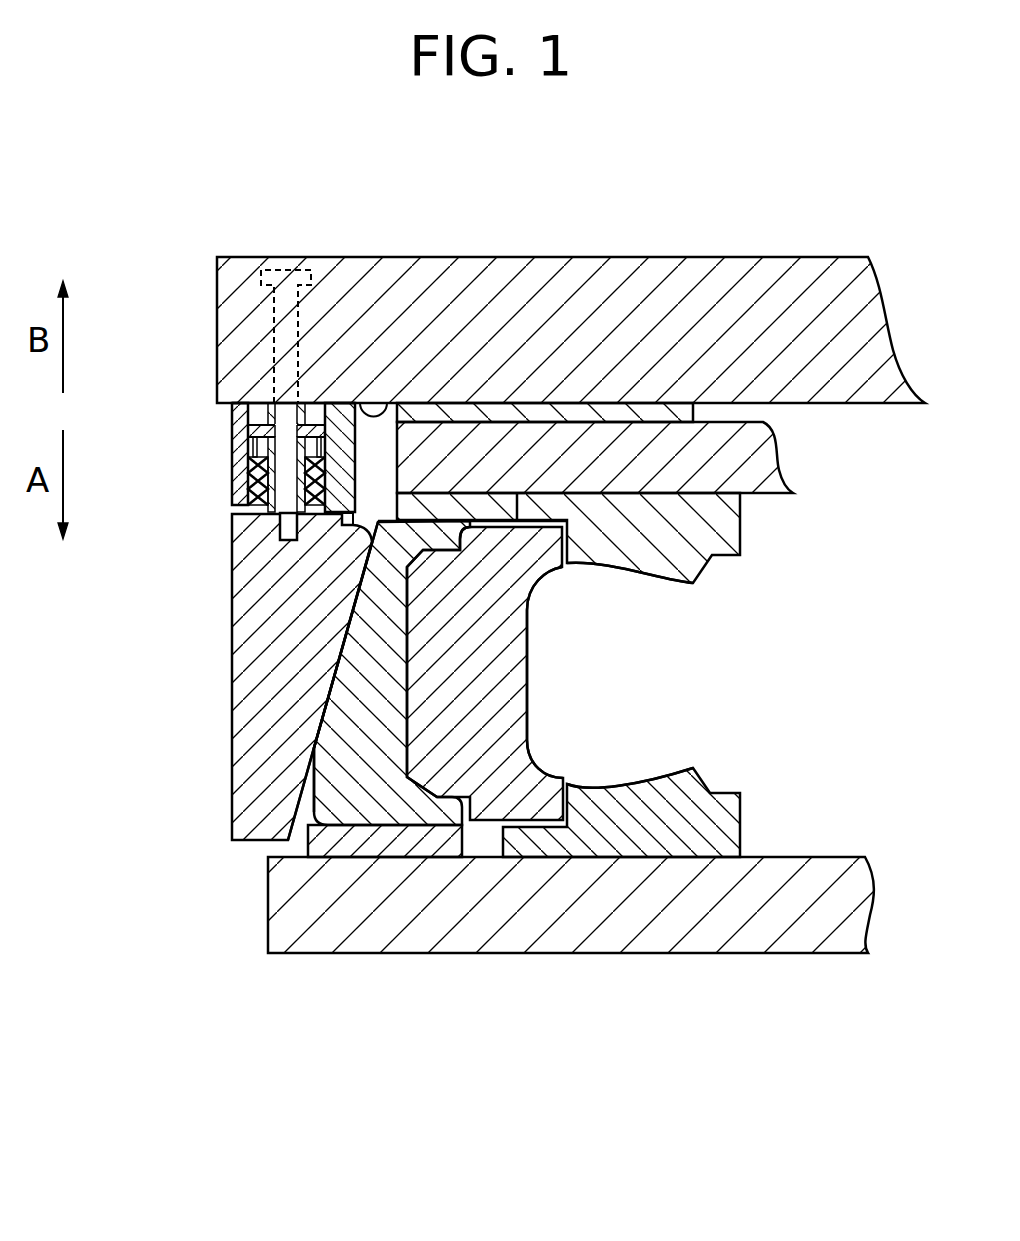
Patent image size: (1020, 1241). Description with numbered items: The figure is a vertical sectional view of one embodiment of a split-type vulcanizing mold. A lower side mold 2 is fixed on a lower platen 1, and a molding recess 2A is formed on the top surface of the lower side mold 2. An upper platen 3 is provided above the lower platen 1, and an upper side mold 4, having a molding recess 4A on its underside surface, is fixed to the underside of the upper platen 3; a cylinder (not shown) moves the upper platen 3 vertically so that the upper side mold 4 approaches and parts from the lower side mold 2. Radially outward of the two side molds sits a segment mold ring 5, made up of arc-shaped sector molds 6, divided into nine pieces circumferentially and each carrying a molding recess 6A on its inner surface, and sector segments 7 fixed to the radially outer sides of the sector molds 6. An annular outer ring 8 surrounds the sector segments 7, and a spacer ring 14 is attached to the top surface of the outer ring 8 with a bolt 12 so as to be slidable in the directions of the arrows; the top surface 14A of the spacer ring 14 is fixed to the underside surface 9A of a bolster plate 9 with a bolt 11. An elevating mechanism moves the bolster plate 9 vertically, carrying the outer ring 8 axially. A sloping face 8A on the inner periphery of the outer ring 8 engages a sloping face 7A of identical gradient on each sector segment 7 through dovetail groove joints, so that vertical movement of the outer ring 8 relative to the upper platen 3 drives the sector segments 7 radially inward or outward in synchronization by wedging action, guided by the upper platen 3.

The lower platen 1 is at (787, 928).
The lower side mold 2 is at (707, 823).
The molding recess 2A is at (648, 776).
The upper platen 3 is at (745, 457).
The upper side mold 4 is at (720, 527).
The molding recess 4A is at (648, 572).
The segment mold ring 5 is at (390, 727).
The sector mold 6 is at (490, 712).
The molding recess 6A is at (527, 633).
The sector segment 7 is at (300, 797).
The sloping face 7A is at (323, 707).
The outer ring 8 is at (256, 750).
The sloping face 8A is at (348, 648).
The bolster plate 9 is at (730, 275).
The underside surface 9A is at (392, 400).
The bolt 11 is at (282, 272).
The bolt 12 is at (236, 530).
The spacer ring 14 is at (234, 437).
The upper surface of spring holder 14A is at (240, 395).